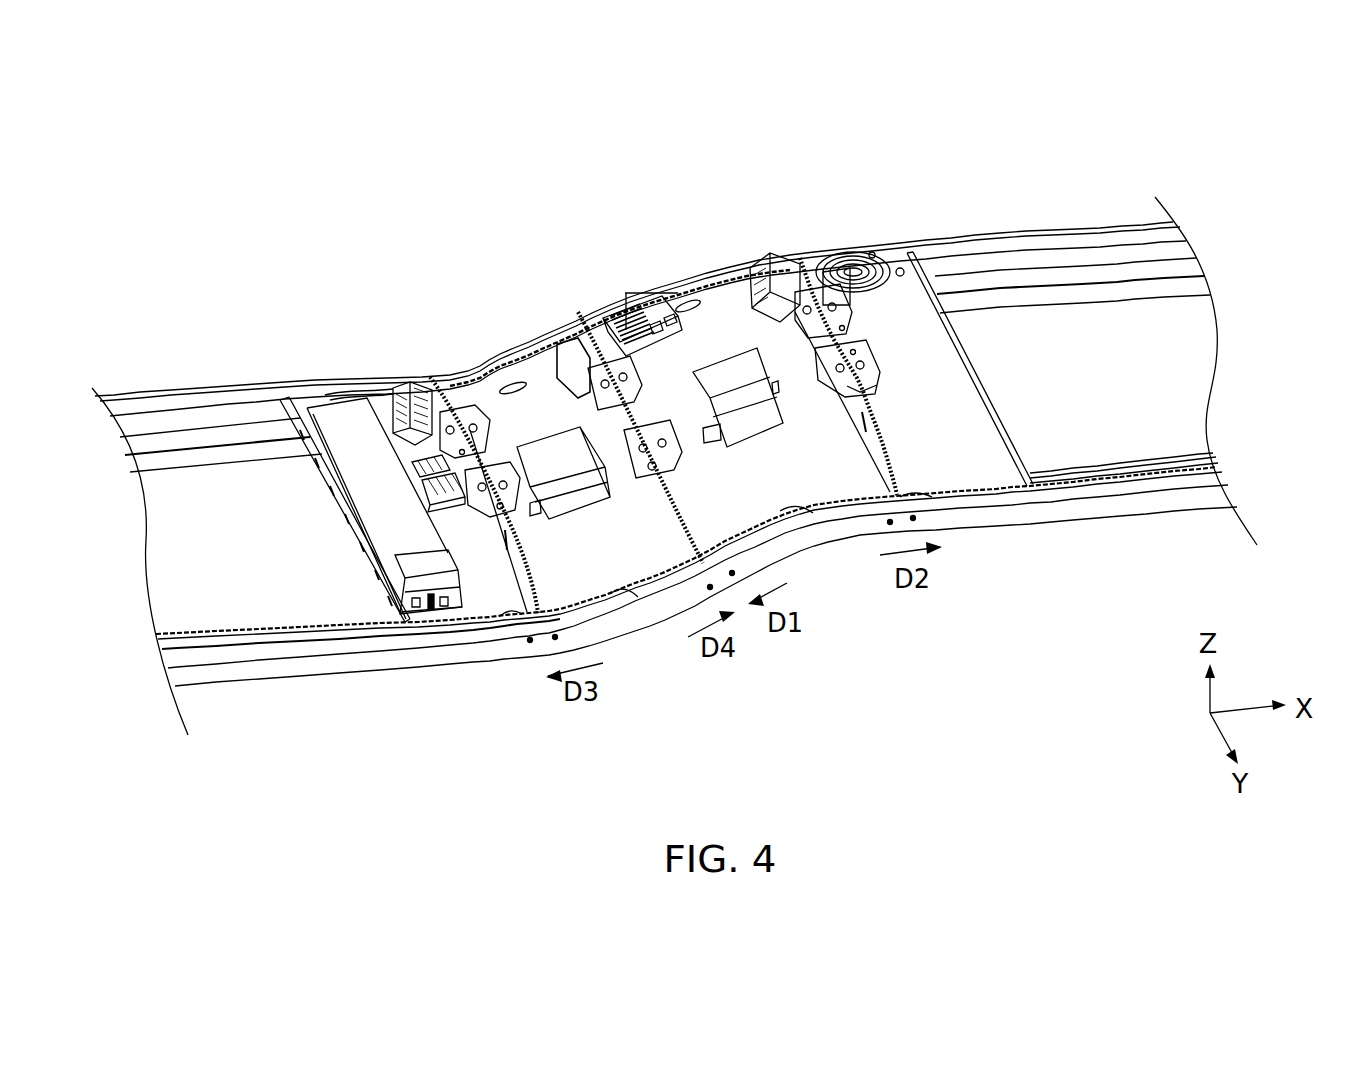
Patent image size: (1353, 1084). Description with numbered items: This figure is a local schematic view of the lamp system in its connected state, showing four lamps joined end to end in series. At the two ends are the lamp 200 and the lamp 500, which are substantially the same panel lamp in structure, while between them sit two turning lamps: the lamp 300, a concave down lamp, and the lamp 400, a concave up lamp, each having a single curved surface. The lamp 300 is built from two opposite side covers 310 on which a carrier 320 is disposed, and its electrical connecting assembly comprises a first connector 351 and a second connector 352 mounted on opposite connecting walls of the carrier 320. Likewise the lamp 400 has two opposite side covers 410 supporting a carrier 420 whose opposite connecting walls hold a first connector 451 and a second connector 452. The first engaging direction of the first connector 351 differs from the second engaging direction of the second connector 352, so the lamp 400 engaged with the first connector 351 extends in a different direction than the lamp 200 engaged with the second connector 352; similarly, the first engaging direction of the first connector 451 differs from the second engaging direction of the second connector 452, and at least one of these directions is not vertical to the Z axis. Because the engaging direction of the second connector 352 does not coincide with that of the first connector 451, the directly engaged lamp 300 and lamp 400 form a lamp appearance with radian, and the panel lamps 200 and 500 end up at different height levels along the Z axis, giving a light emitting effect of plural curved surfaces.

The lamp 200 is at (914, 220).
The lamp 300 is at (687, 252).
The side covers 310 is at (807, 547).
The carrier 320 is at (835, 488).
The first connector 351 is at (650, 312).
The second connector 352 is at (768, 272).
The lamp 400 is at (500, 340).
The side covers 410 is at (614, 635).
The carrier 420 is at (655, 555).
The first connector 451 is at (470, 390).
The second connector 452 is at (570, 347).
The lamp 500 is at (250, 372).